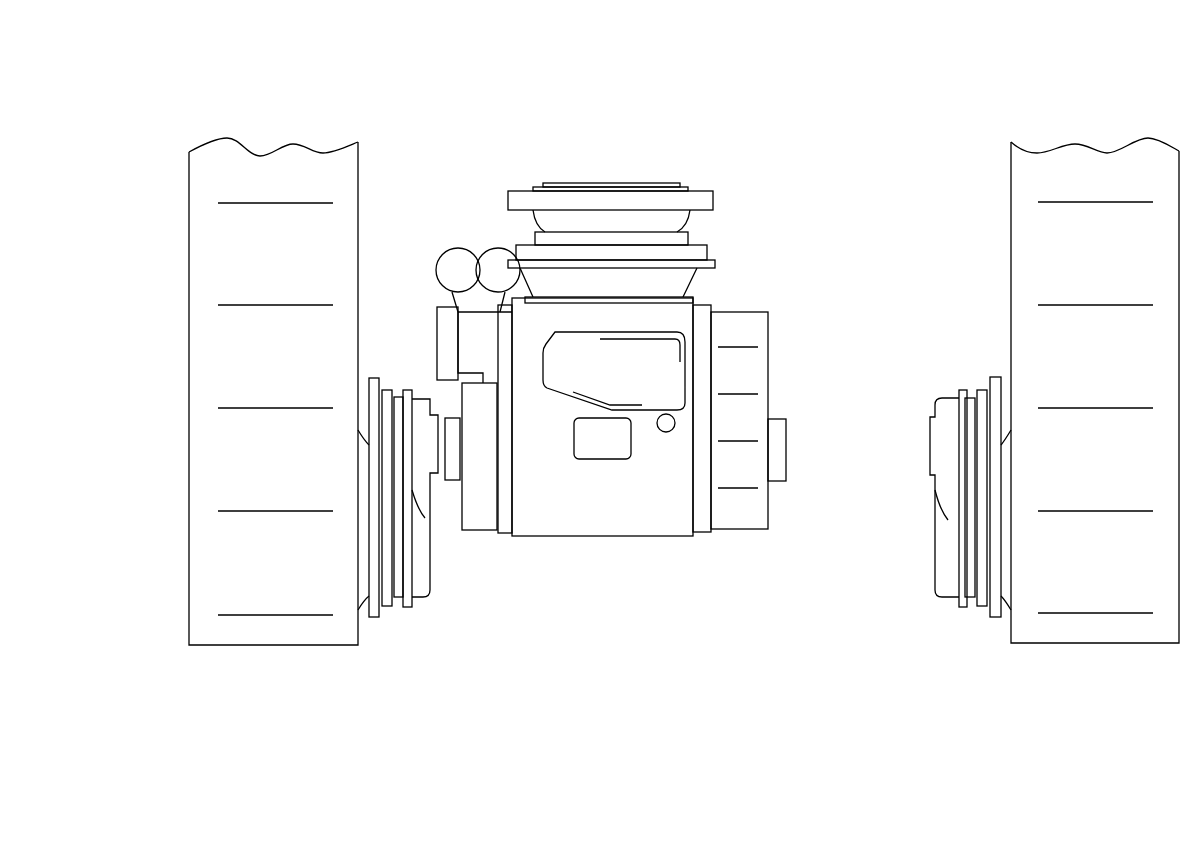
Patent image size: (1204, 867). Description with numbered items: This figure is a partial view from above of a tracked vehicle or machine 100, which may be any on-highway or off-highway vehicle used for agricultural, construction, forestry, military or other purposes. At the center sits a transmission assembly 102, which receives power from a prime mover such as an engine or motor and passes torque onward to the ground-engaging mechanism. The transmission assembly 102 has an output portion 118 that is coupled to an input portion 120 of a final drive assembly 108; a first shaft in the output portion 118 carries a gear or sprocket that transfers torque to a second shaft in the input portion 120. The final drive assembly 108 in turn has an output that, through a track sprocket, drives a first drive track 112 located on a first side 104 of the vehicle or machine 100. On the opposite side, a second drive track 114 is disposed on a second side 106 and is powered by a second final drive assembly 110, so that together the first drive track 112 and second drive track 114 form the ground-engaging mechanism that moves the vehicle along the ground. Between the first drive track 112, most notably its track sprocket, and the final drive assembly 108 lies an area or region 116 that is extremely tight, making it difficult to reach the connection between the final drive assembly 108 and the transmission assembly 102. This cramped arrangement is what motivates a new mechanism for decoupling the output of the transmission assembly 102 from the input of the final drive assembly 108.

The vehicle or machine 100 is at (255, 124).
The transmission assembly 102 is at (774, 299).
The first side 104 is at (278, 664).
The second side 106 is at (1107, 664).
The final drive assembly 108 is at (395, 617).
The second final drive assembly 110 is at (949, 620).
The first drive track 112 is at (327, 165).
The second drive track 114 is at (1082, 162).
The area or region 116 is at (364, 382).
The output portion 118 is at (452, 496).
The input portion 120 is at (438, 406).